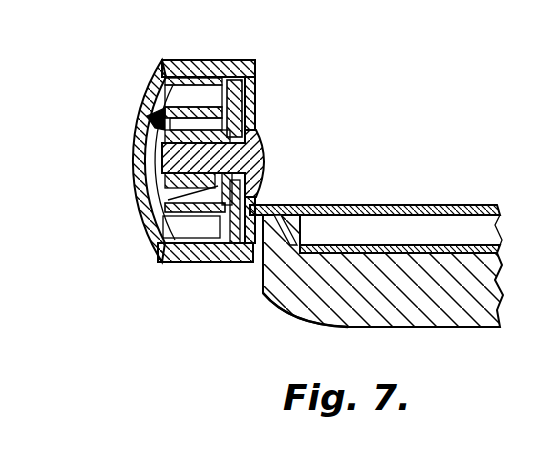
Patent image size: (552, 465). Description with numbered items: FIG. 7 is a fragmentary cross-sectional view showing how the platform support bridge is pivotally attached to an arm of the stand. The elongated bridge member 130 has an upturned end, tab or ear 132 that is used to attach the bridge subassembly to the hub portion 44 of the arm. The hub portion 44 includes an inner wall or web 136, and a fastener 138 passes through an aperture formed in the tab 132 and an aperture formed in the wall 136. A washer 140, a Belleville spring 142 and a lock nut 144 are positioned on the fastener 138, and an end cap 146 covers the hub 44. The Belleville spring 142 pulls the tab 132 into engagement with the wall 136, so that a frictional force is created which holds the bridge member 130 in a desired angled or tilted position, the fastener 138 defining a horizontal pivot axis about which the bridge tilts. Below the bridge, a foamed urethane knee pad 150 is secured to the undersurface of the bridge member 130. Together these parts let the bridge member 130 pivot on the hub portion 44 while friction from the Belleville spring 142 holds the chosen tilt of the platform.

The hub portion 44 is at (225, 60).
The bridge member 130 is at (403, 205).
The upturned end 132 is at (257, 97).
The inner wall 136 is at (257, 72).
The fastener 138 is at (262, 155).
The washer 140 is at (167, 64).
The Belleville spring 142 is at (160, 217).
The lock nut 144 is at (146, 118).
The end cap 146 is at (134, 186).
The knee pad 150 is at (342, 333).